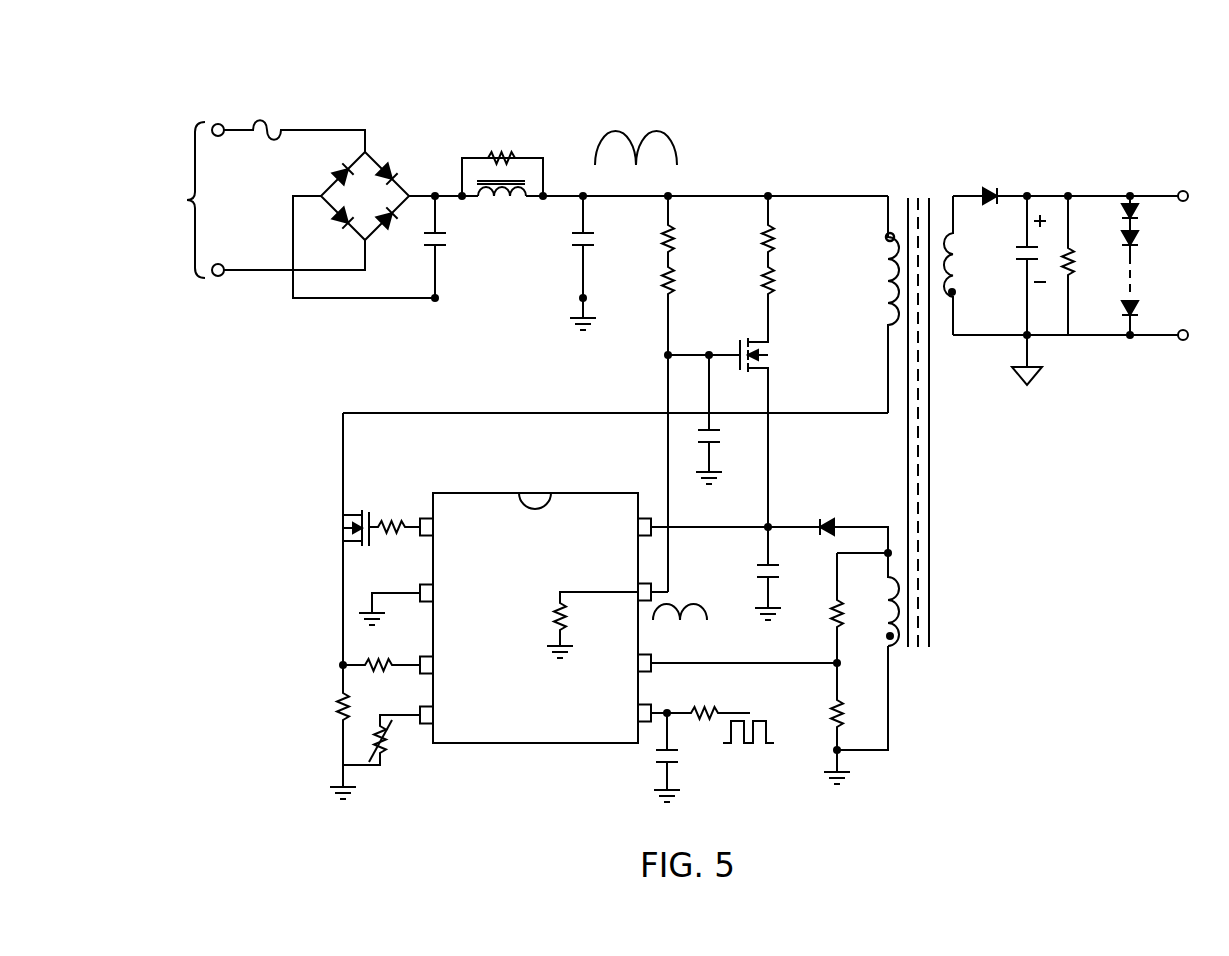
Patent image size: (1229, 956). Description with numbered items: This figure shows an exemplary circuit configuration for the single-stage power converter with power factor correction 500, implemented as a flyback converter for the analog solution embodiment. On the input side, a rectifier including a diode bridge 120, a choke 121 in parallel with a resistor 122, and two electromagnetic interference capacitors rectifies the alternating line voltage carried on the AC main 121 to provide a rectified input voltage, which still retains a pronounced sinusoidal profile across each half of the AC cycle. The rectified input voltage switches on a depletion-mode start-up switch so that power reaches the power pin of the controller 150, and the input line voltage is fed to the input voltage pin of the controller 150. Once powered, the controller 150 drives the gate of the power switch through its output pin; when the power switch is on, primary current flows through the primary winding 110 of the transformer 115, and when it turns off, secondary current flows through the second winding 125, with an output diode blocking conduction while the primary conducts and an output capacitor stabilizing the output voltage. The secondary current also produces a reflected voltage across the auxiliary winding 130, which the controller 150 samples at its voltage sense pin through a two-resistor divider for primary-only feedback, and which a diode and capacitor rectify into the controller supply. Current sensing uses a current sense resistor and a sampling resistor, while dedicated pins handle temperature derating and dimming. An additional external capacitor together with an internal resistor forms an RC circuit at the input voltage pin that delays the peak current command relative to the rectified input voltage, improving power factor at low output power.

The single-stage power converter with power factor correction 500 is at (718, 48).
The primary winding 110 is at (886, 235).
The transformer 115 is at (916, 186).
The diode bridge 120 is at (403, 150).
The choke 121 is at (514, 236).
The resistor 122 is at (499, 150).
The second winding 125 is at (956, 242).
The auxiliary winding 130 is at (897, 634).
The controller 150 is at (593, 493).